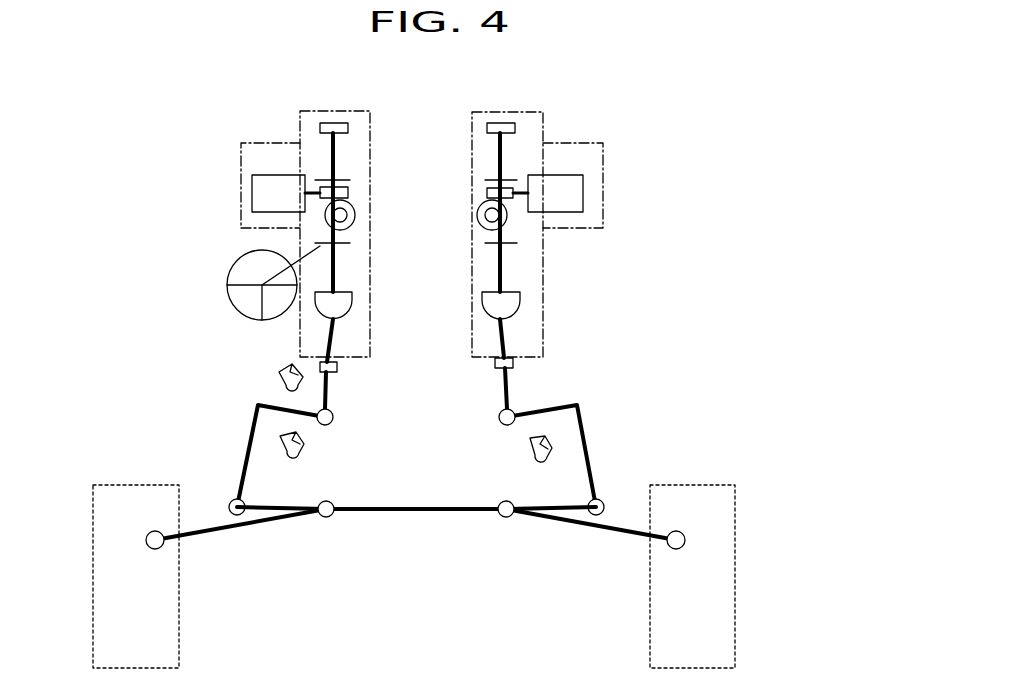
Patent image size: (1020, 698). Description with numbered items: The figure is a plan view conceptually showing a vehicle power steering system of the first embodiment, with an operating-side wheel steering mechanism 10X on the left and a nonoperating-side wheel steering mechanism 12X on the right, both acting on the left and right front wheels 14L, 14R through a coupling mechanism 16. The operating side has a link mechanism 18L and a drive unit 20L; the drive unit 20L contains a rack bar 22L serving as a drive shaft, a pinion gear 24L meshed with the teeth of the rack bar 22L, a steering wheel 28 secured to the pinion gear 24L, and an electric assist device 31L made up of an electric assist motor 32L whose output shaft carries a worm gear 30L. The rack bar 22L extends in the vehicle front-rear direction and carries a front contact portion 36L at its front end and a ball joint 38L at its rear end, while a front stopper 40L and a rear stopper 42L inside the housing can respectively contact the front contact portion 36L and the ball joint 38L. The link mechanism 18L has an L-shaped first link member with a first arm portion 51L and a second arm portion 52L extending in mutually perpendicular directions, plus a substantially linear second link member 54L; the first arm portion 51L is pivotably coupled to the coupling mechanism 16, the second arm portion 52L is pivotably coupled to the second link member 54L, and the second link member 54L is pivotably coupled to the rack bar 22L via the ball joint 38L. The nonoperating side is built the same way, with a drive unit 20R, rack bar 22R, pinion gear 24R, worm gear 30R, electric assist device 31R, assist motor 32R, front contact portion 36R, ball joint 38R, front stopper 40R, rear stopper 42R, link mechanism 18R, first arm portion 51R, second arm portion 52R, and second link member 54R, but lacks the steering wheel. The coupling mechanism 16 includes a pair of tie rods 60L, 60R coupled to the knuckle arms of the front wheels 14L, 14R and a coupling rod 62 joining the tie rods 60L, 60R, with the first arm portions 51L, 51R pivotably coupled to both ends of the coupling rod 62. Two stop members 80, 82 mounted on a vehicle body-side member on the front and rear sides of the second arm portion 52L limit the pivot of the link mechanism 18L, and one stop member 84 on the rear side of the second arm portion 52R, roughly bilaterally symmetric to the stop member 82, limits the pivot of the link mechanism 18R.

The operating-side wheel steering mechanism 10X is at (163, 250).
The nonoperating-side wheel steering mechanism 12X is at (697, 282).
The left front wheel 14L is at (110, 600).
The right front wheel 14R is at (715, 594).
The coupling mechanism 16 is at (489, 566).
The link mechanism 18L is at (173, 389).
The link mechanism 18R is at (659, 391).
The drive unit 20L is at (158, 127).
The drive unit 20R is at (724, 127).
The rack bar 22L is at (337, 266).
The rack bar 22R is at (503, 268).
The pinion gear 24L is at (357, 217).
The pinion gear 24R is at (480, 219).
The steering wheel 28 is at (236, 305).
The worm gear 30L is at (343, 186).
The worm gear 30R is at (486, 191).
The electric assist device 31L is at (300, 166).
The electric assist device 31R is at (552, 166).
The electric assist motor 32L is at (262, 188).
The electric assist motor 32R is at (573, 197).
The front contact portion 36L is at (338, 122).
The front contact portion 36R is at (500, 122).
The ball joint 38L is at (352, 304).
The ball joint 38R is at (512, 303).
The front stopper 40L is at (312, 177).
The front stopper 40R is at (493, 178).
The rear stopper 42L is at (318, 243).
The rear stopper 42R is at (520, 243).
The first arm portion 51L is at (243, 458).
The first arm portion 51R is at (592, 456).
The second arm portion 52L is at (294, 412).
The second arm portion 52R is at (535, 410).
The second link member 54L is at (332, 384).
The second link member 54R is at (506, 383).
The tie rod 60L is at (262, 530).
The tie rod 60R is at (589, 530).
The coupling rod 62 is at (430, 516).
The stop member 80 is at (284, 373).
The stop member 82 is at (292, 452).
The stop member 84 is at (530, 448).